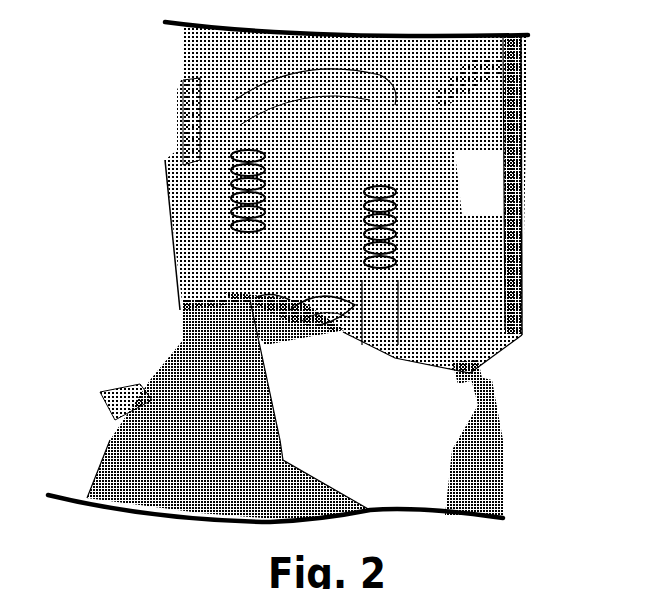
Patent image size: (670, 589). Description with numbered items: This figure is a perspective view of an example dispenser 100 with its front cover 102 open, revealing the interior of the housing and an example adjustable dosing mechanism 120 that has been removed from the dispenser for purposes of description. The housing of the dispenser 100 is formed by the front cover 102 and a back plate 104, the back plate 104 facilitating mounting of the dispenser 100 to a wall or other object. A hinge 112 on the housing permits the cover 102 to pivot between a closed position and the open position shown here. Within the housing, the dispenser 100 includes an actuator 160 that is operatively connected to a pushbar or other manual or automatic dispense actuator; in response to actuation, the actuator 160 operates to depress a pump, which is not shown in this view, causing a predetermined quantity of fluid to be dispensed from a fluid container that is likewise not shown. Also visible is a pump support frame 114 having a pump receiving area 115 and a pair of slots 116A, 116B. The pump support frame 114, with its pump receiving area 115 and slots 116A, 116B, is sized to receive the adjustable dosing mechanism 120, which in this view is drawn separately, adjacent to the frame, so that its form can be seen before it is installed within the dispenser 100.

The dispenser 100 is at (553, 69).
The front cover 102 is at (503, 450).
The back plate 104 is at (513, 140).
The hinge 112 is at (197, 80).
The pump support frame 114 is at (277, 318).
The pump receiving area 115 is at (312, 330).
The slot 116A is at (272, 302).
The slot 116B is at (343, 332).
The adjustable dosing mechanism 120 is at (105, 400).
The actuator 160 is at (383, 297).